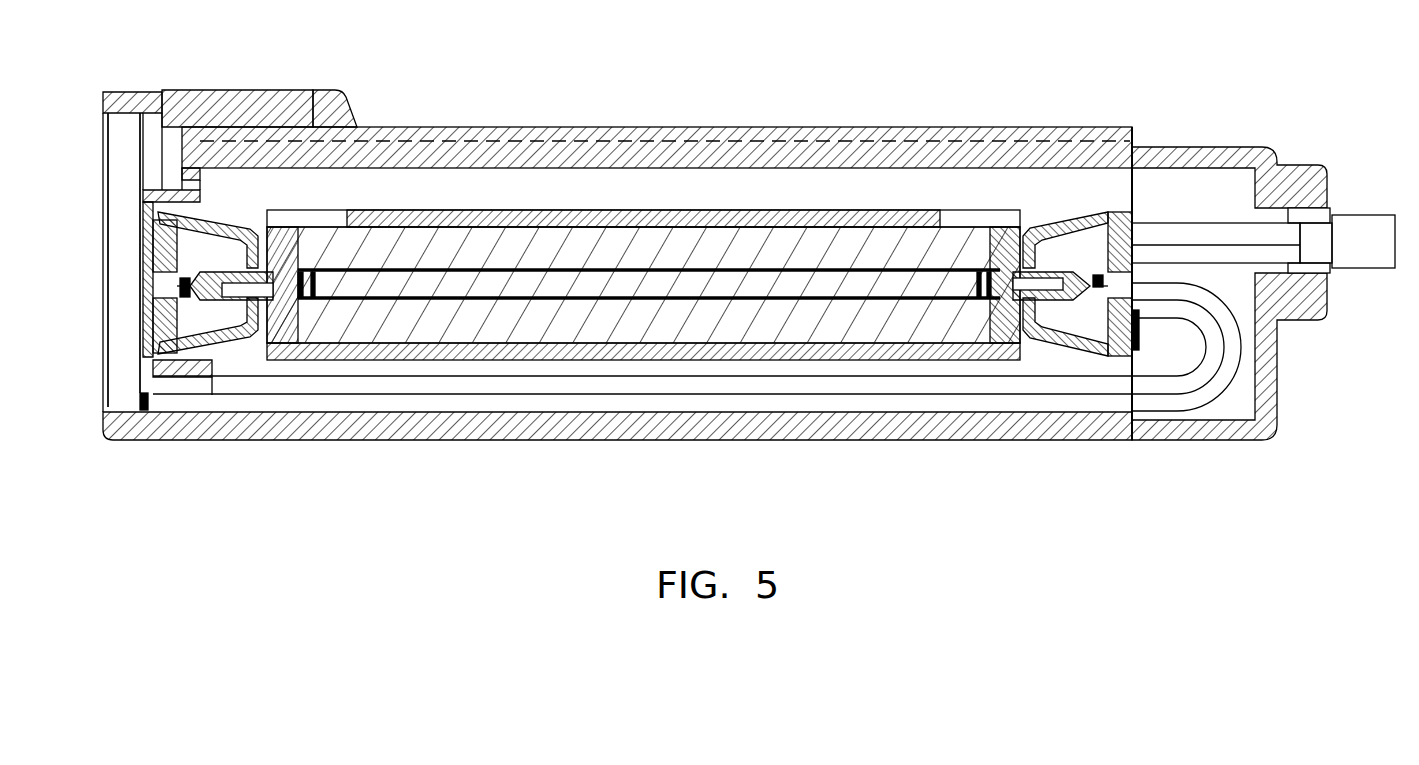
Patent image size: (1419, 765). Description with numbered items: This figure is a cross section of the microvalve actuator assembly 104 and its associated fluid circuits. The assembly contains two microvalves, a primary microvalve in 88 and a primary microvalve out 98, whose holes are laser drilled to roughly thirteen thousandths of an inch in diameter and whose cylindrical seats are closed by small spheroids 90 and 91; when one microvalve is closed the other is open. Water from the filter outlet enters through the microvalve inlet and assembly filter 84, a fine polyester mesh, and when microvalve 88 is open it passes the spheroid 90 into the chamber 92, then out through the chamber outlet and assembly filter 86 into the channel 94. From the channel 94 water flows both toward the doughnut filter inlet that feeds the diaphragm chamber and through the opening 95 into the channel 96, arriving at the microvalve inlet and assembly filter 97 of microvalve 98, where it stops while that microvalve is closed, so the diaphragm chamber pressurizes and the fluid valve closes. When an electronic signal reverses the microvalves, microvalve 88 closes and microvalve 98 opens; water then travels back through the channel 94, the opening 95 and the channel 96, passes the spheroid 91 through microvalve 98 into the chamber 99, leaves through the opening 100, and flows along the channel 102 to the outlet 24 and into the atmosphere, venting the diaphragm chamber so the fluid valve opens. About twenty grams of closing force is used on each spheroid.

The microvalve actuator assembly 104 is at (565, 116).
The chamber outlet and assembly filter 86 is at (143, 243).
The microvalve inlet and assembly filter 84 is at (142, 290).
The primary microvalve in 88 is at (152, 295).
The channel 94 is at (123, 345).
The opening 95 is at (131, 418).
The spheroid 90 is at (196, 298).
The chamber 92 is at (233, 327).
The channel 96 is at (420, 383).
The microvalve inlet and assembly filter 97 is at (1158, 298).
The chamber 99 is at (1058, 240).
The opening 100 is at (1108, 233).
The spheroid 91 is at (1094, 275).
The primary microvalve out 98 is at (1095, 297).
The channel 102 is at (1193, 233).
The outlet 24 is at (1360, 224).